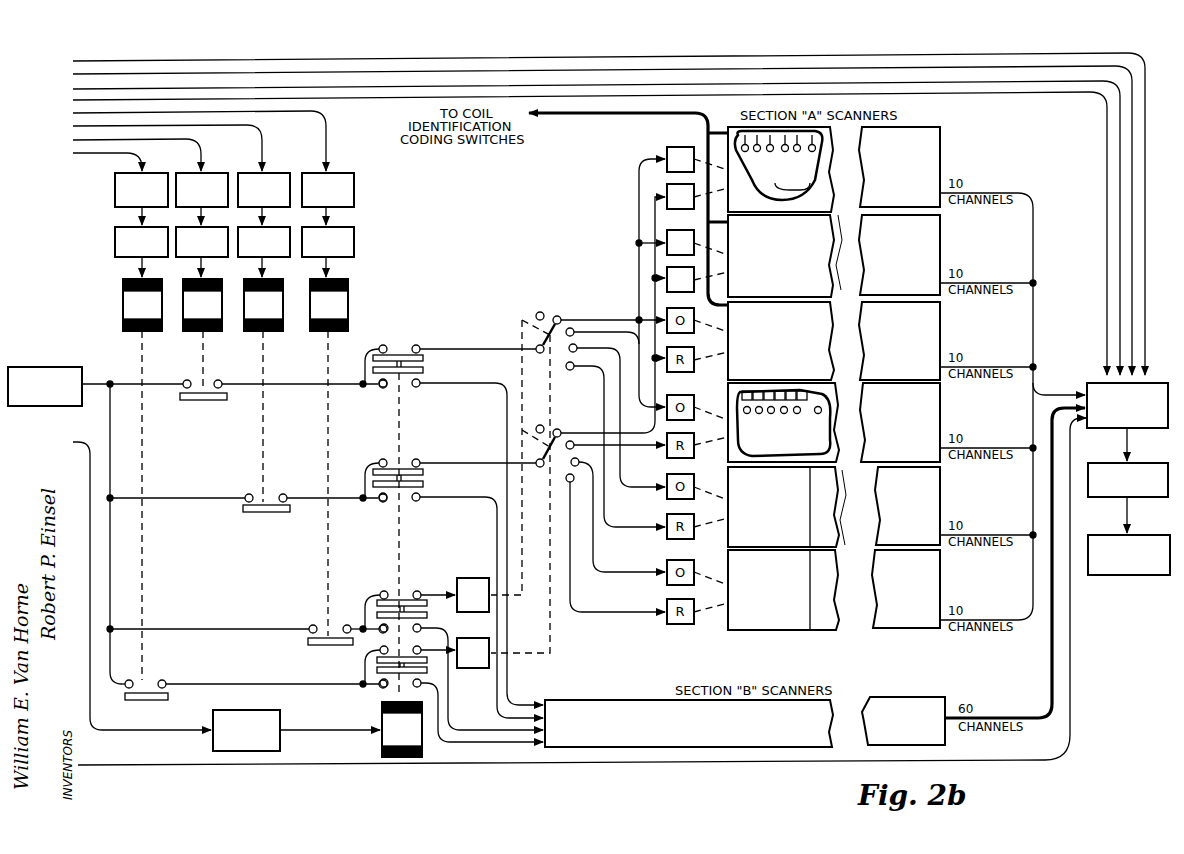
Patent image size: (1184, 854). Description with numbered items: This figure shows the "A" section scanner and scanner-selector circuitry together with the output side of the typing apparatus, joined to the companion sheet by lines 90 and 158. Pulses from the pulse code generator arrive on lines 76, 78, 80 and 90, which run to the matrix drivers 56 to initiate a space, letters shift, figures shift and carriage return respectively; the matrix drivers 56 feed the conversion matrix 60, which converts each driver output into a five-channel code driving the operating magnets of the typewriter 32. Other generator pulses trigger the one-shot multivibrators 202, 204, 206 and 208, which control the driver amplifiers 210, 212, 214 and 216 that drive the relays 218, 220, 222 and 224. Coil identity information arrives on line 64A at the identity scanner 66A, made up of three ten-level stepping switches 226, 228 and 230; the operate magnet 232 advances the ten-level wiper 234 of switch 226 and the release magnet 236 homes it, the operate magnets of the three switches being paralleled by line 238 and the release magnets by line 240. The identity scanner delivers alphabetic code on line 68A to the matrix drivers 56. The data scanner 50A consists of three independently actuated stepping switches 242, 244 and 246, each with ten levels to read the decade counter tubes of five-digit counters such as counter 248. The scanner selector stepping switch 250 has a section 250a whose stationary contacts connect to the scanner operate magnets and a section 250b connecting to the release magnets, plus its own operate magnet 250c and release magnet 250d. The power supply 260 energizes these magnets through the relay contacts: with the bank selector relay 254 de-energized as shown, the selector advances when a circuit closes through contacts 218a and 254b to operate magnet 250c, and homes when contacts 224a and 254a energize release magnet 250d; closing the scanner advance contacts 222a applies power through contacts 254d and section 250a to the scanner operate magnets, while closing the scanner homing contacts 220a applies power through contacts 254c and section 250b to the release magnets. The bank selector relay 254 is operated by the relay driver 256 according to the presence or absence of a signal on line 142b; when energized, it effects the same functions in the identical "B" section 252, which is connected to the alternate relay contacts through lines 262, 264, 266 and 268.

The typewriter 32 is at (1106, 531).
The data scanner 50A is at (818, 502).
The matrix drivers 56 is at (1085, 382).
The conversion matrix 60 is at (1143, 463).
The line 64A is at (603, 116).
The identity scanner 66A is at (808, 256).
The line 68A is at (1036, 281).
The line 76 is at (1130, 116).
The line 78 is at (1118, 145).
The line 80 is at (1105, 190).
The line 90 is at (1110, 52).
The line 142b is at (164, 732).
The line 158 is at (290, 767).
The one-shot multivibrator 202 is at (362, 163).
The one-shot multivibrator 204 is at (274, 173).
The one-shot multivibrator 206 is at (212, 173).
The one-shot multivibrator 208 is at (115, 183).
The driver amplifier 210 is at (317, 250).
The driver amplifier 212 is at (253, 250).
The driver amplifier 214 is at (191, 250).
The driver amplifier 216 is at (131, 250).
The relay 218 is at (358, 306).
The relay contacts 218a is at (313, 625).
The scanner homing relay 220 is at (270, 333).
The scanner homing relay contacts 220a is at (247, 495).
The scanner advance relay 222 is at (190, 333).
The scanner advance relay contacts 222a is at (219, 378).
The relay 224 is at (122, 310).
The relay contacts 224a is at (162, 680).
The stepping switch 226 is at (857, 169).
The stepping switch 228 is at (945, 238).
The stepping switch 230 is at (945, 340).
The operate magnet 232 is at (667, 145).
The ten-level wiper 234 is at (768, 168).
The release magnet 236 is at (663, 188).
The line 238 is at (636, 231).
The line 240 is at (656, 266).
The stepping switch 242 is at (857, 422).
The stepping switch 244 is at (945, 500).
The stepping switch 246 is at (945, 583).
The five-digit counter 248 is at (790, 414).
The scanner selector stepping switch 250 is at (553, 399).
The selector switch section 250a is at (549, 313).
The selector switch section 250b is at (533, 442).
The operate magnet 250c is at (475, 577).
The release magnet 250d is at (472, 669).
The B section 252 is at (765, 731).
The bank selector relay 254 is at (397, 759).
The bank selector relay contacts 254a is at (380, 650).
The bank selector relay contacts 254b is at (383, 590).
The bank selector relay contacts 254c is at (419, 459).
The bank selector relay contacts 254d is at (420, 345).
The relay driver 256 is at (283, 712).
The power supply 260 is at (42, 367).
The line 262 is at (516, 704).
The line 264 is at (500, 716).
The line 266 is at (520, 743).
The line 268 is at (488, 744).